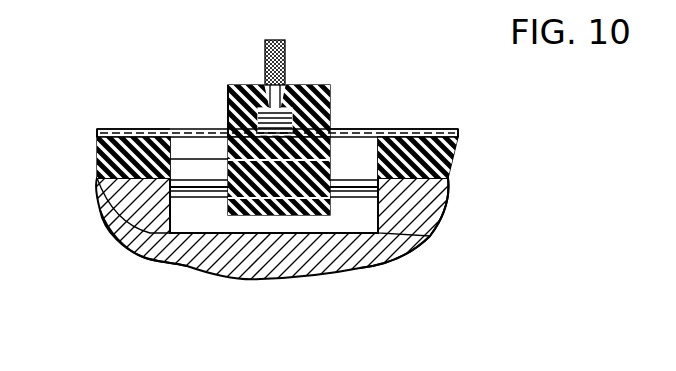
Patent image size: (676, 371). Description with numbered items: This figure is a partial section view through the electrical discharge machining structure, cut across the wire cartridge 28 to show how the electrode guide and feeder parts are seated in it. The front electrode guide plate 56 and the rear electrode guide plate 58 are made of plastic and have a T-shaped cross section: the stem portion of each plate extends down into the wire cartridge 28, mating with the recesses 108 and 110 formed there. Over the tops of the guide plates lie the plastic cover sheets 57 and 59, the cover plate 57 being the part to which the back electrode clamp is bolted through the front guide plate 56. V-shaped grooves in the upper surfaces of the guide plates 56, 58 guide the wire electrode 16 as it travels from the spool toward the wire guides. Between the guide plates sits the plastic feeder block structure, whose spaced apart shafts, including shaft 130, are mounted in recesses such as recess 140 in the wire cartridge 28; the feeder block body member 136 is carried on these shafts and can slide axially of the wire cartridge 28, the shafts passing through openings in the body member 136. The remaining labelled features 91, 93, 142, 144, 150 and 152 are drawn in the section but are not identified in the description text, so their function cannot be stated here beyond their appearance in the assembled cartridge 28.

The wire electrode 16 is at (367, 129).
The wire cartridge 28 is at (203, 263).
The front electrode guide plate 56 is at (443, 129).
The cover plate 57 is at (400, 128).
The rear electrode guide plate 58 is at (104, 129).
The cover sheet 59 is at (139, 129).
The left body wall 91 is at (102, 202).
The right outer wall 93 is at (420, 227).
The recess 108 is at (450, 159).
The recess 110 is at (100, 163).
The shaft 130 is at (198, 166).
The feeder block body member 136 is at (143, 258).
The recess 140 is at (445, 195).
The upper center block 142 is at (233, 85).
The block side 144 is at (224, 102).
The lower center block 150 is at (322, 110).
The stem 152 is at (283, 86).